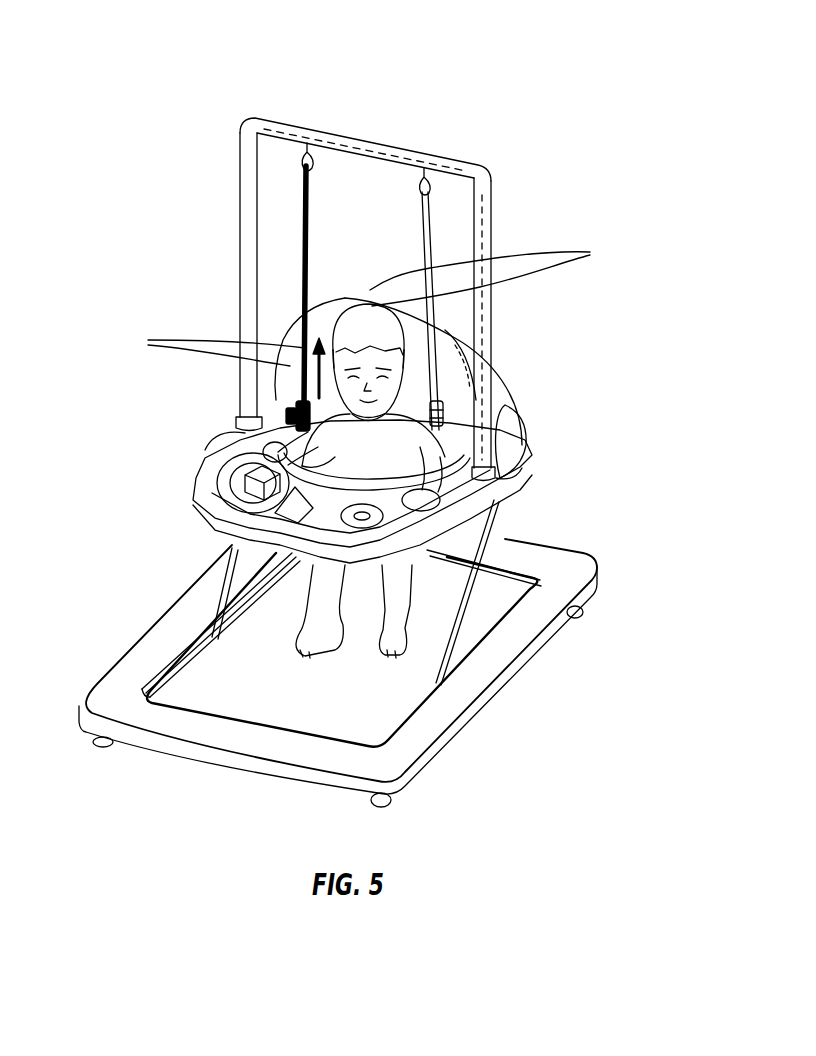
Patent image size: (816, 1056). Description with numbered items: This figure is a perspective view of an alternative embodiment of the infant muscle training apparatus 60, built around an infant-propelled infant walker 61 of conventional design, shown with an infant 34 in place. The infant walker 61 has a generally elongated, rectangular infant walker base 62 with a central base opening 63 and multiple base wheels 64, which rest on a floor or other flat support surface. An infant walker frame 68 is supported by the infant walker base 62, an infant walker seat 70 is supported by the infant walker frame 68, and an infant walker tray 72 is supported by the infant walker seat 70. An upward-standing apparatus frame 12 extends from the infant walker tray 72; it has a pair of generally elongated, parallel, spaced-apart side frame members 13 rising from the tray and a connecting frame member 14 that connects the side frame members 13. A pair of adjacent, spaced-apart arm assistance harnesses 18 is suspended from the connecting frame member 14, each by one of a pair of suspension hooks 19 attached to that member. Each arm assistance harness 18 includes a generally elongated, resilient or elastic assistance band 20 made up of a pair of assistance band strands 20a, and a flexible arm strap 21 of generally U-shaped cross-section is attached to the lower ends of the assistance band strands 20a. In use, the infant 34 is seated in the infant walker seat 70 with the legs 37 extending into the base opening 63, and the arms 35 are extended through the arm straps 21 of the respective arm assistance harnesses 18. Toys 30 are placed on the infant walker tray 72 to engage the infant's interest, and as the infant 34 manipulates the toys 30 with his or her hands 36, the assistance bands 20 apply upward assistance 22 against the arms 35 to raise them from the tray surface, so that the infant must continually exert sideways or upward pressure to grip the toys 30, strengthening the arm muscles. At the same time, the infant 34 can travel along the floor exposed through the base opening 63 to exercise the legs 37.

The infant muscle training apparatus 60 is at (236, 62).
The apparatus frame 12 is at (513, 240).
The side frame members 13 is at (256, 219).
The connecting frame member 14 is at (368, 146).
The arm assistance harnesses 18 is at (455, 218).
The suspension hooks 19 is at (312, 168).
The assistance band 20 is at (408, 247).
The assistance band strands 20a is at (370, 302).
The arm strap 21 is at (290, 408).
The upward assistance 22 is at (323, 420).
The toys 30 is at (245, 497).
The infant 34 is at (338, 301).
The arms 35 is at (272, 440).
The hands 36 is at (235, 468).
The legs 37 is at (413, 583).
The infant walker 61 is at (585, 466).
The infant walker base 62 is at (592, 550).
The base opening 63 is at (180, 670).
The base wheels 64 is at (577, 610).
The infant walker frame 68 is at (218, 575).
The infant walker seat 70 is at (470, 328).
The infant walker tray 72 is at (505, 435).